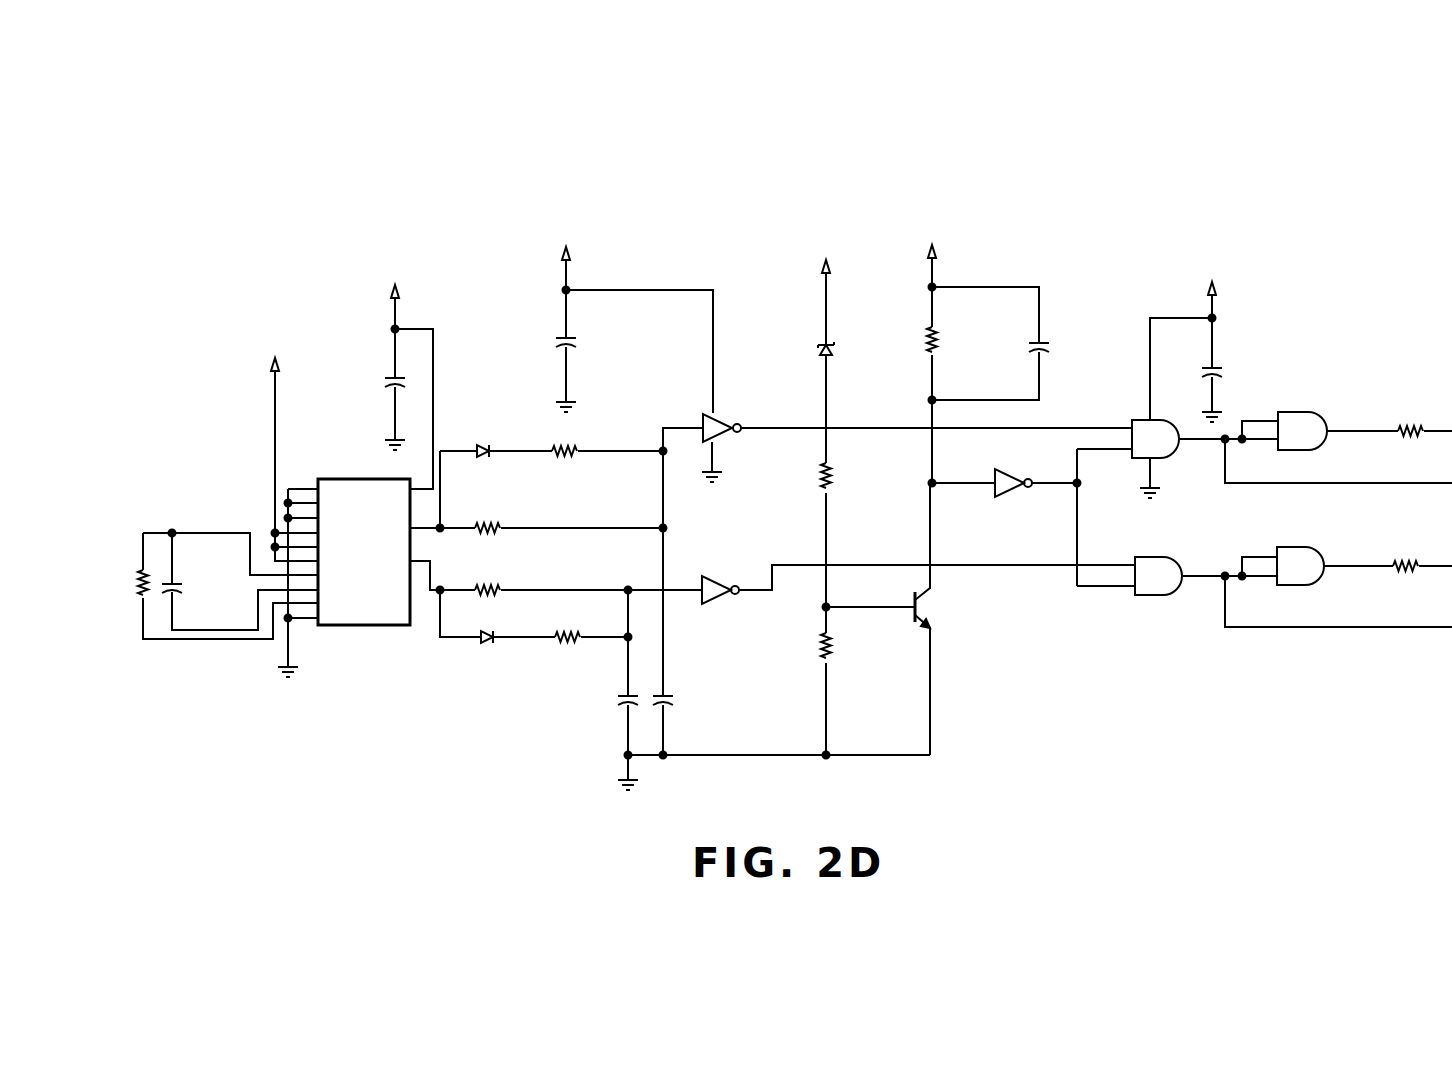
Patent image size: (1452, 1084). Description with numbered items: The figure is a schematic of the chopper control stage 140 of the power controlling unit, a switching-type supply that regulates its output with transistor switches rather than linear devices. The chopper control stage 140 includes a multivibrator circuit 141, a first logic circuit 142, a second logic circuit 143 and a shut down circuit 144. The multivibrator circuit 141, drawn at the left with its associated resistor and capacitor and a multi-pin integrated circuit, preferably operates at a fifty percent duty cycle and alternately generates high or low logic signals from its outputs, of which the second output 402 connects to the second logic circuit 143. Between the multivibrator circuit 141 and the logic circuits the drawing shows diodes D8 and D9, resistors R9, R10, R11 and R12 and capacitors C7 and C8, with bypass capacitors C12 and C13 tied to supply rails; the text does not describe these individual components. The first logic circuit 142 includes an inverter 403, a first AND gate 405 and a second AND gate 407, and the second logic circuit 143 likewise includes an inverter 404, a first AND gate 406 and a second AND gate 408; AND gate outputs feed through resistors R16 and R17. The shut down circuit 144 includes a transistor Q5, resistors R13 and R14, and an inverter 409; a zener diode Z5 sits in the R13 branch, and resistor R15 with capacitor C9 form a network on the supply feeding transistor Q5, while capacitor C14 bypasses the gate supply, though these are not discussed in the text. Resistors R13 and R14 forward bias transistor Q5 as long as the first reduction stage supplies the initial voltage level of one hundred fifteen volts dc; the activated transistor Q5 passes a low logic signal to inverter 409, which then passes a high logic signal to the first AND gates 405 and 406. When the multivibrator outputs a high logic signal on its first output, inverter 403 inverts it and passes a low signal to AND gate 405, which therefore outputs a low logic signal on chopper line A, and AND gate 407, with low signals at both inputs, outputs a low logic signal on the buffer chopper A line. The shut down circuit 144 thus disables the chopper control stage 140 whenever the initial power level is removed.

The chopper control stage 140 is at (945, 193).
The multivibrator circuit 141 is at (232, 688).
The first logic circuit 142 is at (1062, 305).
The second logic circuit 143 is at (1040, 596).
The shut down circuit 144 is at (943, 652).
The second output 402 is at (438, 594).
The inverter 403 is at (718, 418).
The inverter 404 is at (720, 602).
The first AND gate 405 is at (1138, 420).
The first AND gate 406 is at (1165, 557).
The second AND gate 407 is at (1290, 412).
The second AND gate 408 is at (1328, 543).
The inverter 409 is at (1008, 494).
The capacitor C7 is at (620, 701).
The capacitor C8 is at (670, 701).
The capacitor C9 is at (1050, 346).
The capacitor C12 is at (383, 375).
The capacitor C13 is at (556, 340).
The capacitor C14 is at (1225, 370).
The diode D8 is at (483, 445).
The diode D9 is at (488, 645).
The resistor R9 is at (488, 522).
The resistor R10 is at (575, 447).
The resistor R11 is at (490, 586).
The resistor R12 is at (566, 645).
The resistor R13 is at (834, 478).
The resistor R14 is at (834, 652).
The resistor R15 is at (926, 340).
The resistor R16 is at (1410, 425).
The resistor R17 is at (1405, 560).
The zener diode Z5 is at (830, 356).
The transistor Q5 is at (932, 607).